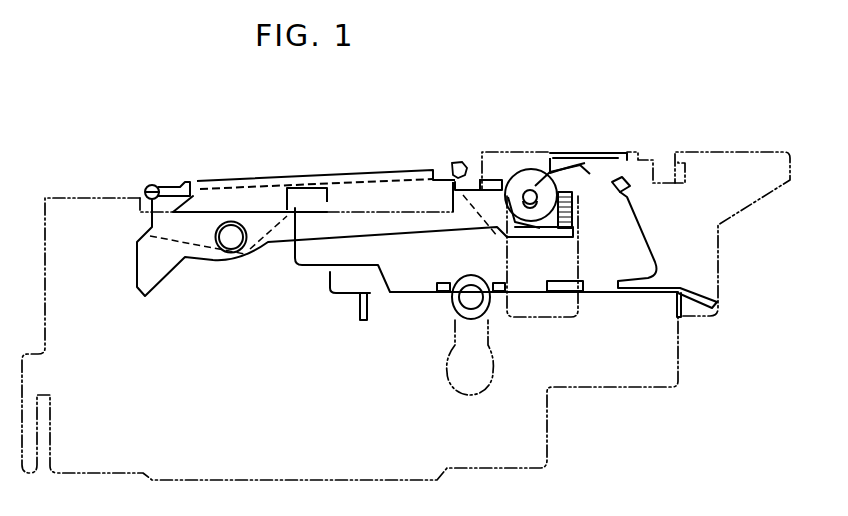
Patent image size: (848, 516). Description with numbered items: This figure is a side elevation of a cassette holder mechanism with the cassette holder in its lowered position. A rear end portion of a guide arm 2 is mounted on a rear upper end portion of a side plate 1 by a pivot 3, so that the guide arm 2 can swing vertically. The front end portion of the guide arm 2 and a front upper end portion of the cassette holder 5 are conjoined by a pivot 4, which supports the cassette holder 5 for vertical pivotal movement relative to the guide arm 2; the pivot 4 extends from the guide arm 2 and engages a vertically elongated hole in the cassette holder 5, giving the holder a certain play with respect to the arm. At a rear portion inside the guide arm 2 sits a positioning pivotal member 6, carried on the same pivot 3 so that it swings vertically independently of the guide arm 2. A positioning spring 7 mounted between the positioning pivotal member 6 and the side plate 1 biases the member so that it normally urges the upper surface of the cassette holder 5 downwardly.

The side plate 1 is at (456, 162).
The guide arm 2 is at (152, 278).
The pivot 3 is at (230, 242).
The pivot 4 is at (529, 190).
The cassette holder 5 is at (596, 278).
The positioning pivotal member 6 is at (152, 185).
The positioning spring 7 is at (375, 173).